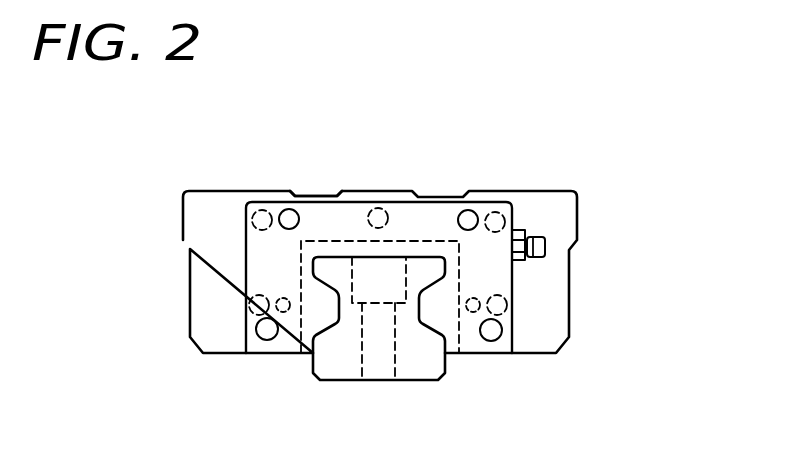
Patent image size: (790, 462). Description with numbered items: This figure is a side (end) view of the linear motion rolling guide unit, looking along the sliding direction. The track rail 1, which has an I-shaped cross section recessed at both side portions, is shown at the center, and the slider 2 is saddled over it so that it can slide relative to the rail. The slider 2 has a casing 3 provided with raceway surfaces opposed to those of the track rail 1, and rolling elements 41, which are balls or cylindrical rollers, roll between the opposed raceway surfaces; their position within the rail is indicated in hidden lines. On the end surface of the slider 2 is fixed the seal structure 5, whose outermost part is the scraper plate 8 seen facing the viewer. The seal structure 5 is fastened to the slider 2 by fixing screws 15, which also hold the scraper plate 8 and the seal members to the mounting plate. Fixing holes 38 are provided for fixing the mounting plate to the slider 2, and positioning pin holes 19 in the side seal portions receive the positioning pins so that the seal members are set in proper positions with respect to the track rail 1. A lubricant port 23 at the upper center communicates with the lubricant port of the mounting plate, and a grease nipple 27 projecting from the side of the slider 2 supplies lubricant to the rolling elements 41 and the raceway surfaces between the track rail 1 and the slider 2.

The track rail 1 is at (341, 360).
The slider 2 is at (486, 193).
The casing 3 is at (545, 207).
The seal structure 5 is at (427, 213).
The scraper plate 8 is at (323, 215).
The fixing screws 15 is at (290, 212).
The positioning pin holes 19 is at (284, 313).
The lubricant port 23 is at (377, 206).
The grease nipples 27 is at (546, 246).
The fixing holes 38 is at (257, 205).
The rolling elements 41 is at (362, 345).